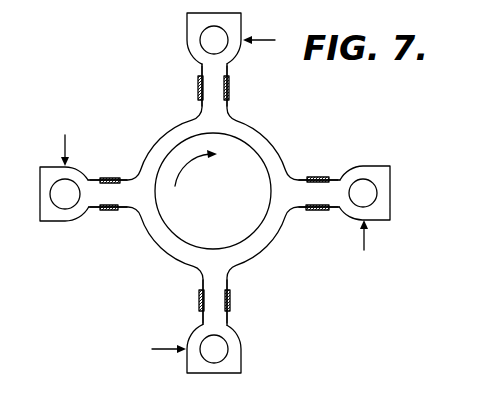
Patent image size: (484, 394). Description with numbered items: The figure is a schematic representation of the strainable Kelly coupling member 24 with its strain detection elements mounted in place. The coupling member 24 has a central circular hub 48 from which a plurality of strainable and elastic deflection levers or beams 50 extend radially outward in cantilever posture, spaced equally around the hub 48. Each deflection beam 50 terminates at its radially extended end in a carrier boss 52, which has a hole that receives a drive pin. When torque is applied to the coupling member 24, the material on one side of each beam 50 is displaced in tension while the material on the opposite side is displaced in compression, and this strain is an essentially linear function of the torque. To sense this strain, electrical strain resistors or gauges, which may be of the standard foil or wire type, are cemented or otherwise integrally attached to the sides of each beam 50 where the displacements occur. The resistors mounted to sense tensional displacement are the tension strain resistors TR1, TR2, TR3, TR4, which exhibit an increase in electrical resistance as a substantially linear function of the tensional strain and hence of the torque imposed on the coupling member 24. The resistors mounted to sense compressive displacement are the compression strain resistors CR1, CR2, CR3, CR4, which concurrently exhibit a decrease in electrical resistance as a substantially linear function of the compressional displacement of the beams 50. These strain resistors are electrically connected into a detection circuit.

The Kelly coupling member 24 is at (272, 119).
The central circular hub 48 is at (257, 247).
The deflection beam 50 is at (212, 73).
The carrier boss 52 is at (198, 30).
The compression strain resistor CR1 is at (200, 90).
The compression strain resistor CR2 is at (320, 178).
The compression strain resistor CR3 is at (230, 300).
The compression strain resistor CR4 is at (110, 210).
The tension strain resistor TR1 is at (227, 92).
The tension strain resistor TR2 is at (310, 211).
The tension strain resistor TR3 is at (202, 306).
The tension strain resistor TR4 is at (107, 178).